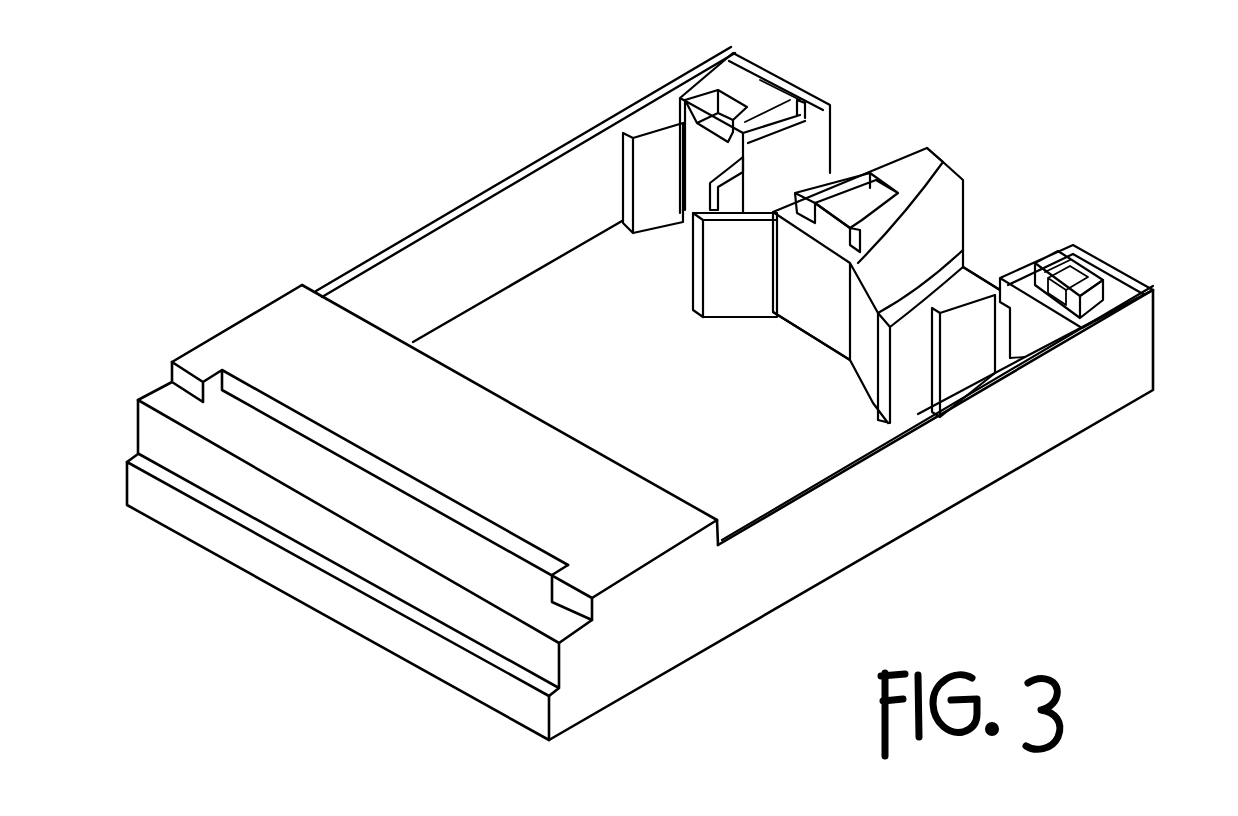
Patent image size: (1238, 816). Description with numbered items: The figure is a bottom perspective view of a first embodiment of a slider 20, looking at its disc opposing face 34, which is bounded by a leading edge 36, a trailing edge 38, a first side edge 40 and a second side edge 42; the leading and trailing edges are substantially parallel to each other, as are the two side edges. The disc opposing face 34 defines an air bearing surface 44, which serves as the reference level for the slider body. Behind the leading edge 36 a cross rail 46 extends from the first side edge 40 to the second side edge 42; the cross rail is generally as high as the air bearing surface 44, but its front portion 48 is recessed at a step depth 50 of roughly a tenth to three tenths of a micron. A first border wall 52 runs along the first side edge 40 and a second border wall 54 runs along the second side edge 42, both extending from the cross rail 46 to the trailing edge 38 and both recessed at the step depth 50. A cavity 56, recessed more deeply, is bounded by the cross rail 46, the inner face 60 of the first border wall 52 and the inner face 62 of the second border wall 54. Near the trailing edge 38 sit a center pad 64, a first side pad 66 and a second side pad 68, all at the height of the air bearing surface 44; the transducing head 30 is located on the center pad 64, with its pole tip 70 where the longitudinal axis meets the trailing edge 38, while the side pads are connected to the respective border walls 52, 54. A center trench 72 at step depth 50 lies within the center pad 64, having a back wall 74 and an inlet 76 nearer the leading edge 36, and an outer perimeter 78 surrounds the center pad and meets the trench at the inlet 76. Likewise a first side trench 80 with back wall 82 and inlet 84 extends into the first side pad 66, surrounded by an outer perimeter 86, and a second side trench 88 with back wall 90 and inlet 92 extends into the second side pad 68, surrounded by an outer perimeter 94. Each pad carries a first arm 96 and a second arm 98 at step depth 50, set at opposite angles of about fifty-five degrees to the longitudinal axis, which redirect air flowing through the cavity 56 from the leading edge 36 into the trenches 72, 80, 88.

The slider 20 is at (229, 138).
The transducing head 30 is at (995, 152).
The disc opposing face 34 is at (278, 327).
The leading edge 36 is at (343, 523).
The trailing edge 38 is at (990, 252).
The first side edge 40 is at (525, 194).
The second side edge 42 is at (778, 512).
The air bearing surface 44 is at (627, 546).
The cross rail 46 is at (108, 393).
The front portion 48 is at (236, 433).
The step depth 50 is at (598, 598).
The first border wall 52 is at (466, 212).
The second border wall 54 is at (880, 451).
The cavity 56 is at (498, 197).
The inner face 60 is at (584, 245).
The inner face 62 is at (816, 478).
The center pad 64 is at (909, 143).
The first side pad 66 is at (768, 67).
The second side pad 68 is at (1080, 250).
The pole tip 70 is at (927, 152).
The center trench 72 is at (857, 212).
The back wall 74 is at (890, 192).
The inlet 76 is at (827, 230).
The outer perimeter 78 is at (957, 178).
The first side trench 80 is at (723, 118).
The back wall 82 is at (754, 85).
The inlet 84 is at (697, 125).
The outer perimeter 86 is at (805, 102).
The second side trench 88 is at (1068, 300).
The back wall 90 is at (1058, 265).
The inlet 92 is at (1028, 358).
The outer perimeter 94 is at (1078, 258).
The first arm 96 is at (650, 130).
The second arm 98 is at (760, 173).